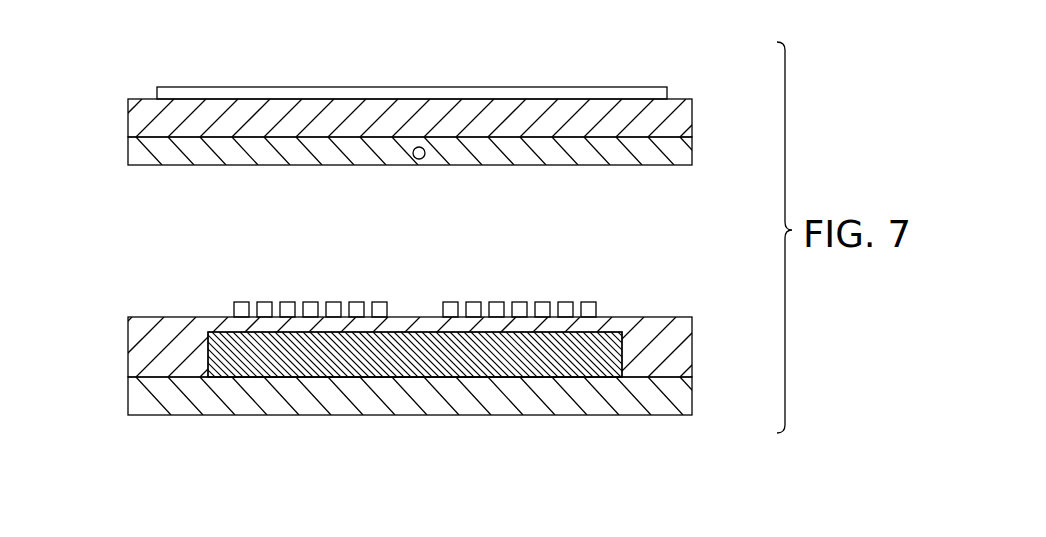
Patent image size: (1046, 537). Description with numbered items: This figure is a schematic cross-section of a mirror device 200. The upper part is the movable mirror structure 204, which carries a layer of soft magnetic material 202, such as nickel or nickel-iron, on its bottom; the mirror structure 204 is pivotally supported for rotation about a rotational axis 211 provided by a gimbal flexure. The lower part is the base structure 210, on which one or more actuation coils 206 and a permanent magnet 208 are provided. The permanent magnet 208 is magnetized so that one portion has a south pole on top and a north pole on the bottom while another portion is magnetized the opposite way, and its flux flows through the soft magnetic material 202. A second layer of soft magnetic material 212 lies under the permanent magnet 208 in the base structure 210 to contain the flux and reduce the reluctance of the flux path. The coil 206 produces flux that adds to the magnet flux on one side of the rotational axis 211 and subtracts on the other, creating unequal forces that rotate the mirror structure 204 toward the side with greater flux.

The mirror device 200 is at (100, 73).
The soft magnetic material 202 is at (668, 166).
The movable mirror structure 204 is at (713, 117).
The actuation coil 206 is at (337, 302).
The permanent magnet 208 is at (622, 347).
The base structure 210 is at (726, 321).
The rotational axis 211 is at (422, 159).
The second layer of soft magnetic material 212 is at (442, 416).